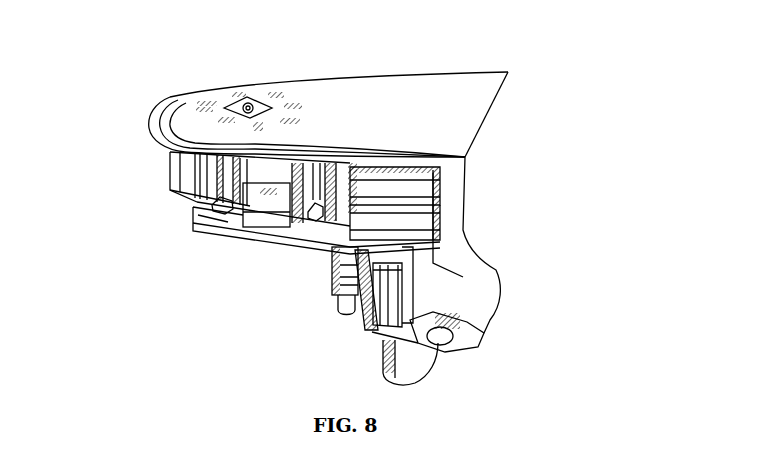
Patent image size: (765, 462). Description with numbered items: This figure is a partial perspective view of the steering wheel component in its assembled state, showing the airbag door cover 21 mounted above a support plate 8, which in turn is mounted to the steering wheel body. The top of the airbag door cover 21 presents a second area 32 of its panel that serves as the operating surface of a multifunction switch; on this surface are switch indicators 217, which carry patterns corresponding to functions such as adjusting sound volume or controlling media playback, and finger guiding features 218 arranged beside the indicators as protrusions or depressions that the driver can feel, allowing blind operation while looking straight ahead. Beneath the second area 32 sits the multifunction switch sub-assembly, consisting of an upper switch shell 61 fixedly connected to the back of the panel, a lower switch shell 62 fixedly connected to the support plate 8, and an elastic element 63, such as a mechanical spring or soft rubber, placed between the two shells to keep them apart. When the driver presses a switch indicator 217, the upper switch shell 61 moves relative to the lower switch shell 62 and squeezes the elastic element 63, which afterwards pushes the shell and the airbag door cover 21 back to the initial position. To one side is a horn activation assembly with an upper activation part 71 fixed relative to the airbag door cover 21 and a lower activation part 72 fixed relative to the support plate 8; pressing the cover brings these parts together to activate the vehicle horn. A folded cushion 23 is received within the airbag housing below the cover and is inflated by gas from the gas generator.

The airbag door cover 21 is at (407, 75).
The second area 32 is at (340, 113).
The switch indicator 217 is at (195, 99).
The finger guiding feature 218 is at (270, 92).
The upper switch shell 61 is at (160, 180).
The elastic element 63 is at (213, 212).
The lower switch shell 62 is at (207, 235).
The support plate 8 is at (262, 255).
The upper activation part 71 is at (420, 183).
The lower activation part 72 is at (417, 228).
The folded cushion 23 is at (457, 302).